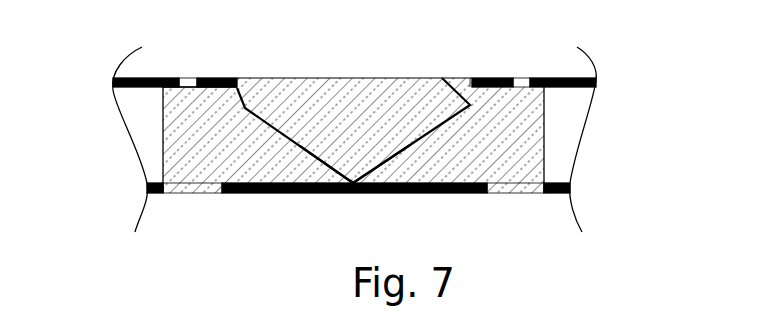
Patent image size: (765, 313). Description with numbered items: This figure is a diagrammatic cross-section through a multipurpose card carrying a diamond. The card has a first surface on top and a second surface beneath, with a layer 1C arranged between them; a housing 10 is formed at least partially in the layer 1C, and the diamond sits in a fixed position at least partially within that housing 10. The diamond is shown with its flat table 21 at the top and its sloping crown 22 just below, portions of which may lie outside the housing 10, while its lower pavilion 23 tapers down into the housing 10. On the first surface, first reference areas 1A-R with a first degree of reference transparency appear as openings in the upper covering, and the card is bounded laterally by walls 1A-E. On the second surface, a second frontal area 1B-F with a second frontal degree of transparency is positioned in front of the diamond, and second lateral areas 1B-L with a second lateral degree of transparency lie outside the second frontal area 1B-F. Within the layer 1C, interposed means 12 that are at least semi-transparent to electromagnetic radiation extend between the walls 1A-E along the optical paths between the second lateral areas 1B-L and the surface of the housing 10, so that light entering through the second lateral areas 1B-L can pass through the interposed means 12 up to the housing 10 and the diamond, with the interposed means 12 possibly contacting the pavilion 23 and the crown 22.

The first reference area 1A-R is at (188, 77).
The wall of the card 1A-E is at (162, 122).
The housing 10 is at (243, 95).
The table 21 is at (337, 78).
The crown 22 is at (455, 93).
The layer 1C is at (570, 117).
The interposed means 12 is at (192, 148).
The second lateral area 1B-L is at (196, 193).
The second frontal area 1B-F is at (287, 193).
The pavilion 23 is at (398, 158).